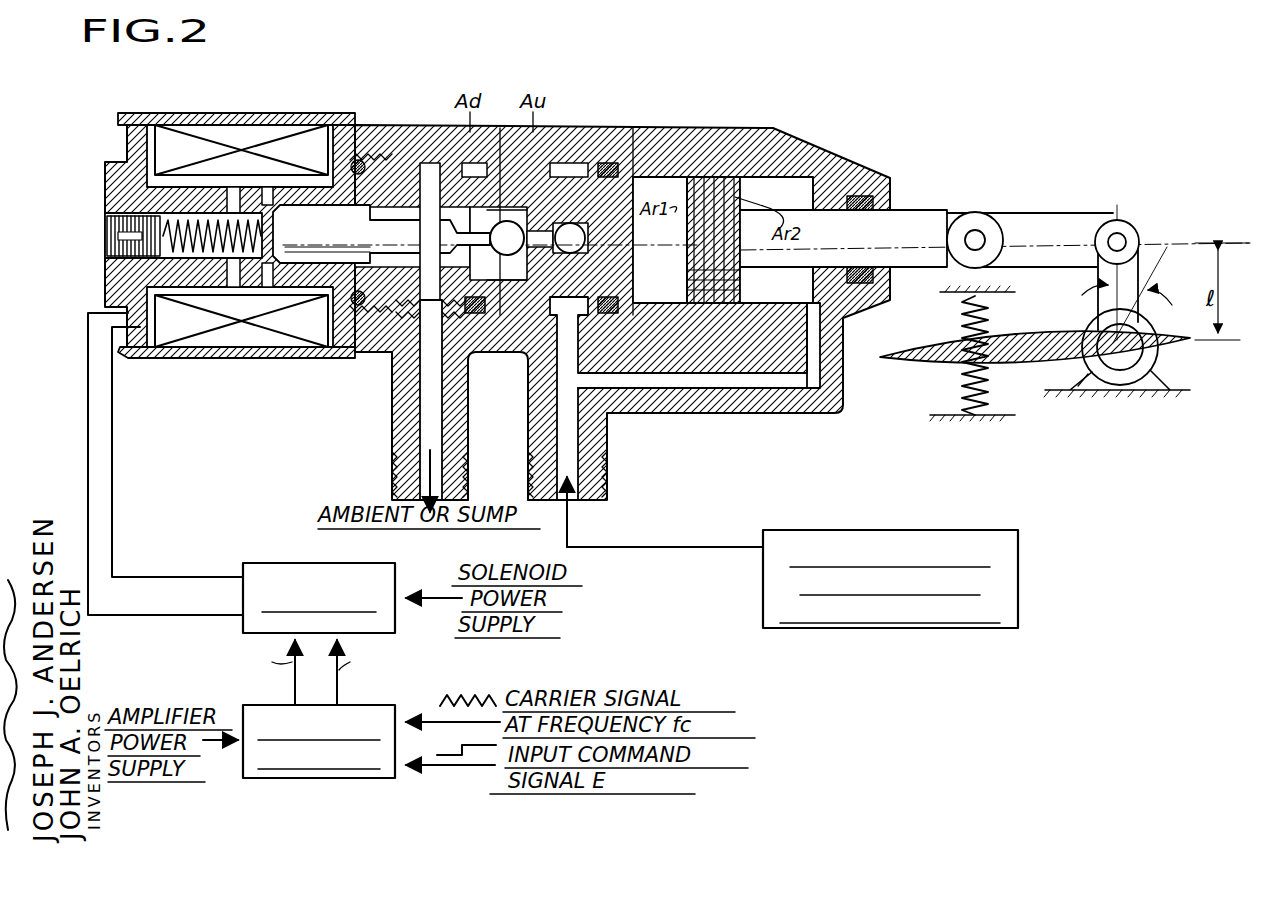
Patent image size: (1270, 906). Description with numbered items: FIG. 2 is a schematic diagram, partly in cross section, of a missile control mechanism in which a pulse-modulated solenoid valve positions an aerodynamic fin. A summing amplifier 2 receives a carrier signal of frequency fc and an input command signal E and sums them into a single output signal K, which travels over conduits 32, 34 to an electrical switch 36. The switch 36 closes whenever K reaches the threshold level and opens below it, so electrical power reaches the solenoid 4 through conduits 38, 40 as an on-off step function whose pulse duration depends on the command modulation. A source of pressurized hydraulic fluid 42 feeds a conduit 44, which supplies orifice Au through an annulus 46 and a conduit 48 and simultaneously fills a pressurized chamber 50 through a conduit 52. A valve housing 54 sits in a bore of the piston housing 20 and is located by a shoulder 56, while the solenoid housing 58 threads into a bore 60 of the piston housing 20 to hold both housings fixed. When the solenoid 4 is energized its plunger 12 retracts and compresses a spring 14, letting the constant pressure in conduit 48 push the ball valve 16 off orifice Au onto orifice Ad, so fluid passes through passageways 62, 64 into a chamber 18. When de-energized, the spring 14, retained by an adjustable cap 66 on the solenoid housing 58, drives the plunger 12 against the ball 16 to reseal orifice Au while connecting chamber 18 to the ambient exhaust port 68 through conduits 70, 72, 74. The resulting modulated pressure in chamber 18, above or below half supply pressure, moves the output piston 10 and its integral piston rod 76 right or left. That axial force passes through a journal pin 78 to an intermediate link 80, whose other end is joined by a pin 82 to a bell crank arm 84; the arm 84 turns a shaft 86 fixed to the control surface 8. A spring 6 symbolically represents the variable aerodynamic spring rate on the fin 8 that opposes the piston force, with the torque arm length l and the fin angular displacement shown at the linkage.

The summing amplifier 2 is at (310, 778).
The solenoid 4 is at (200, 115).
The spring 6 is at (960, 390).
The control surface 8 is at (1056, 355).
The output piston 10 is at (800, 148).
The plunger 12 is at (486, 234).
The spring 14 is at (150, 196).
The ball valve 16 is at (505, 150).
The chamber 18 is at (662, 188).
The piston housing 20 is at (723, 138).
The conduit 32 is at (340, 694).
The conduit 34 is at (292, 686).
The electrical switch 36 is at (268, 568).
The conduit 38 is at (88, 396).
The conduit 40 is at (112, 392).
The source of pressurized hydraulic fluid 42 is at (938, 535).
The conduit 44 is at (650, 552).
The annulus 46 is at (573, 148).
The conduit 48 is at (498, 430).
The pressurized chamber 50 is at (820, 150).
The conduit 52 is at (713, 378).
The valve housing 54 is at (418, 160).
The shoulder 56 is at (633, 150).
The solenoid housing 58 is at (306, 117).
The bore 60 is at (440, 150).
The passageway 62 is at (512, 355).
The passageway 64 is at (693, 240).
The adjustable cap 66 is at (110, 234).
The ambient exhaust port 68 is at (430, 425).
The conduit 70 is at (383, 150).
The conduit 72 is at (402, 346).
The conduit 74 is at (402, 363).
The piston rod 76 is at (910, 218).
The journal pin 78 is at (976, 238).
The intermediate link 80 is at (1045, 215).
The pin 82 is at (1118, 240).
The bell crank arm 84 is at (1105, 300).
The shaft 86 is at (1132, 366).